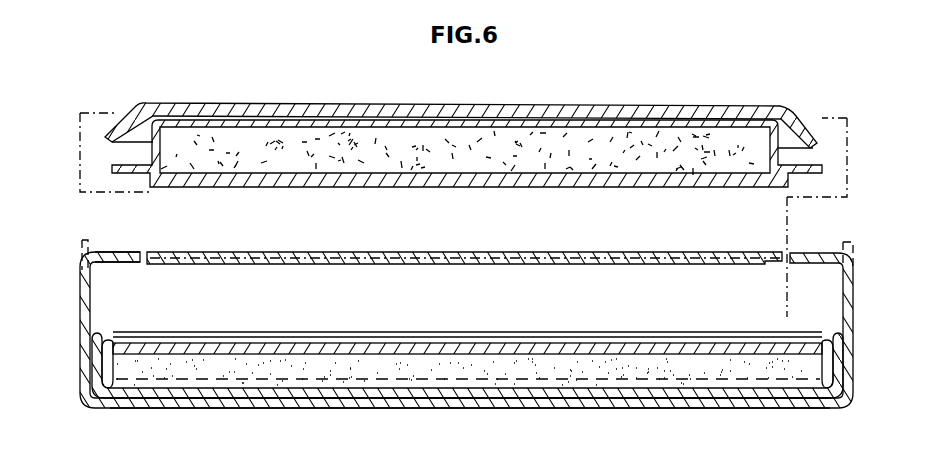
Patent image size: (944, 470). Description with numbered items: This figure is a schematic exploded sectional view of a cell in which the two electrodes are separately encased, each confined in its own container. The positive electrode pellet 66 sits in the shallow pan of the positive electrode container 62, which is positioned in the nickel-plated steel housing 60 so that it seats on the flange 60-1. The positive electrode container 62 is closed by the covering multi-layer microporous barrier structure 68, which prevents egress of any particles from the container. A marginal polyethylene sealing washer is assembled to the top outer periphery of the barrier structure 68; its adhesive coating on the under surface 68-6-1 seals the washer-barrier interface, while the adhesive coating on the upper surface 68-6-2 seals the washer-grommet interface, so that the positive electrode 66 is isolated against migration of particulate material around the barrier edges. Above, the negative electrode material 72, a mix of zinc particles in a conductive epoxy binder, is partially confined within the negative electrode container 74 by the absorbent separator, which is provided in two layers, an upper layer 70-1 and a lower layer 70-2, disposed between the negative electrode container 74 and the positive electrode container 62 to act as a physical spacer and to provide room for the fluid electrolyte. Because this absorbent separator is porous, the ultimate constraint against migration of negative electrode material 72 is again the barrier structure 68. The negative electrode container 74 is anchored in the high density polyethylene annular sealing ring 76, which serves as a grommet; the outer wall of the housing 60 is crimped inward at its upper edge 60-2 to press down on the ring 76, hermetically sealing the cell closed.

The outer steel housing 60 is at (445, 355).
The flange 60-1 is at (163, 410).
The crimped upper edge 60-2 is at (92, 278).
The positive electrode container 62 is at (117, 386).
The positive electrode pellet 66 is at (428, 378).
The multi-layer microporous barrier structure 68 is at (467, 339).
The adhesive coating on under surface of sealing washer 68-6-1 is at (133, 340).
The adhesive coating on upper surface of sealing washer 68-6-2 is at (395, 302).
The upper absorbent separator layer 70-1 is at (245, 183).
The lower absorbent separator layer 70-2 is at (208, 251).
The negative electrode material 72 is at (503, 155).
The negative electrode container 74 is at (140, 120).
The polyethylene annular sealing ring 76 is at (90, 110).